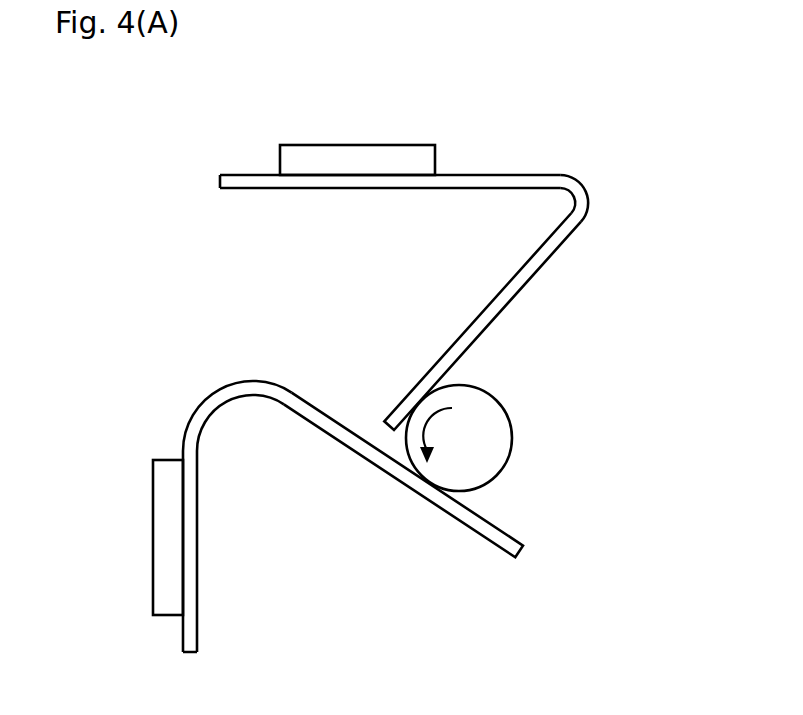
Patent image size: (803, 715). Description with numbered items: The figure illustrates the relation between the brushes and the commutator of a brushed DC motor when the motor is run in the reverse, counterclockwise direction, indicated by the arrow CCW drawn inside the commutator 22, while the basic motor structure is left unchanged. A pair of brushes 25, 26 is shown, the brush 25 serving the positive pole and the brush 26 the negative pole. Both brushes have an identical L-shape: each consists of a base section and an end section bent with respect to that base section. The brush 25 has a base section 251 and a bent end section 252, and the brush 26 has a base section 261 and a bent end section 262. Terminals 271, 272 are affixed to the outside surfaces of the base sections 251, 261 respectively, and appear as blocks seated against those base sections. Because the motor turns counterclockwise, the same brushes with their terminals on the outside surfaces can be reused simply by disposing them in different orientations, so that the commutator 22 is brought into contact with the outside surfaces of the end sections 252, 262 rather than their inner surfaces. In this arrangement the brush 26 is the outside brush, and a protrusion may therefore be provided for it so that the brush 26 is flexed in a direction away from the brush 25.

The commutator 22 is at (512, 418).
The brush 25 is at (432, 245).
The base section 251 is at (308, 185).
The end section 252 is at (455, 352).
The brush 26 is at (353, 516).
The base section 261 is at (198, 537).
The end section 262 is at (467, 527).
The terminal 271 is at (395, 160).
The terminal 272 is at (165, 537).